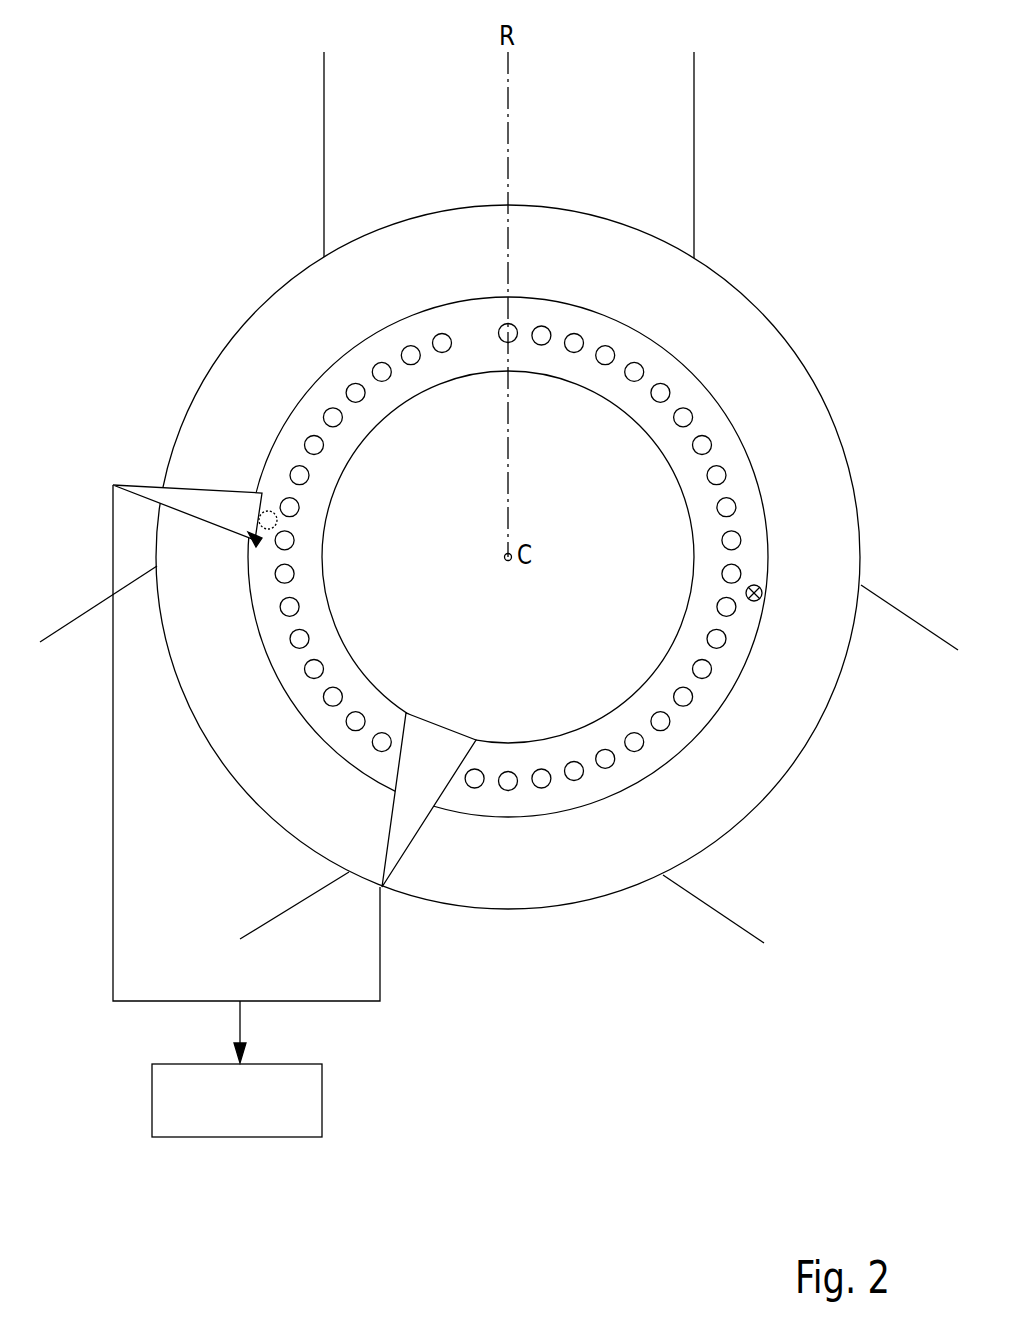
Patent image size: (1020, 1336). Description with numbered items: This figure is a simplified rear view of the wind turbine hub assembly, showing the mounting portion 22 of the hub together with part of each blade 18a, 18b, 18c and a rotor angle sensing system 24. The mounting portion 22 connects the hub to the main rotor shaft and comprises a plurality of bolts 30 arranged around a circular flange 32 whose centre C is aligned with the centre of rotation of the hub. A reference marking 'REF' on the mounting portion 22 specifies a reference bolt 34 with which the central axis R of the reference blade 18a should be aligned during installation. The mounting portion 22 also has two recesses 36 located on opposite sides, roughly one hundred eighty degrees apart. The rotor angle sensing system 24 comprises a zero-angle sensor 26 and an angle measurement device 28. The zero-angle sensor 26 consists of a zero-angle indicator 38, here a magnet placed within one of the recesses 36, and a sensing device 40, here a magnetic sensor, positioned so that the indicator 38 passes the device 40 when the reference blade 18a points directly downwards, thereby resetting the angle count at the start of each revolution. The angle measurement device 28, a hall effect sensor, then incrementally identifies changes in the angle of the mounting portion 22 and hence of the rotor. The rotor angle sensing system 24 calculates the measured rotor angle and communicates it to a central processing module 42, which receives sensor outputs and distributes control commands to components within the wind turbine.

The reference blade 18a is at (695, 157).
The blade 18b is at (888, 600).
The blade 18c is at (97, 598).
The mounting portion 22 is at (790, 380).
The rotor angle sensing system 24 is at (412, 968).
The zero-angle sensor 26 is at (218, 428).
The angle measurement device 28 is at (384, 883).
The bolts 30 is at (712, 446).
The circular flange 32 is at (312, 387).
The reference bolt 34 is at (505, 323).
The recesses 36 is at (243, 550).
The zero-angle indicator 38 is at (763, 586).
The sensing device 40 is at (135, 484).
The central processing module 42 is at (322, 1100).